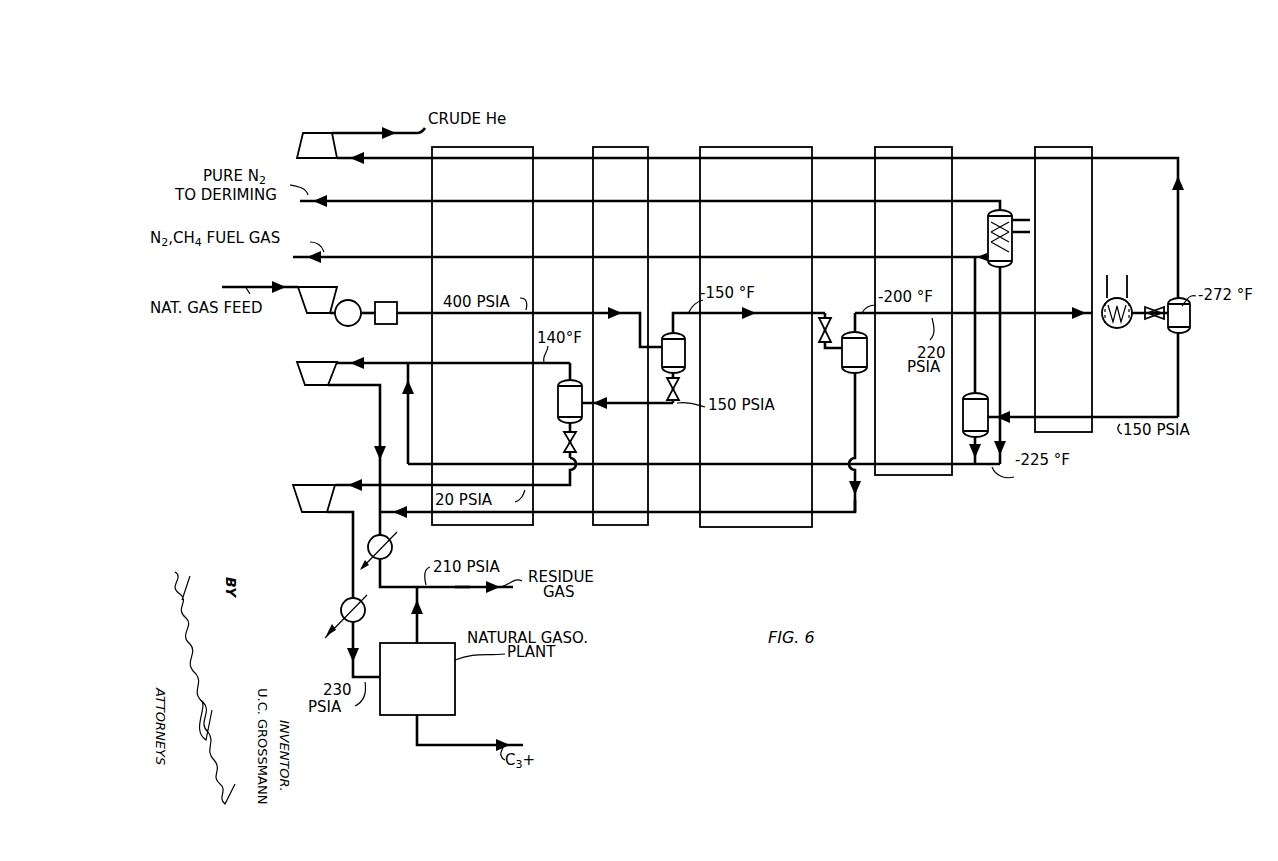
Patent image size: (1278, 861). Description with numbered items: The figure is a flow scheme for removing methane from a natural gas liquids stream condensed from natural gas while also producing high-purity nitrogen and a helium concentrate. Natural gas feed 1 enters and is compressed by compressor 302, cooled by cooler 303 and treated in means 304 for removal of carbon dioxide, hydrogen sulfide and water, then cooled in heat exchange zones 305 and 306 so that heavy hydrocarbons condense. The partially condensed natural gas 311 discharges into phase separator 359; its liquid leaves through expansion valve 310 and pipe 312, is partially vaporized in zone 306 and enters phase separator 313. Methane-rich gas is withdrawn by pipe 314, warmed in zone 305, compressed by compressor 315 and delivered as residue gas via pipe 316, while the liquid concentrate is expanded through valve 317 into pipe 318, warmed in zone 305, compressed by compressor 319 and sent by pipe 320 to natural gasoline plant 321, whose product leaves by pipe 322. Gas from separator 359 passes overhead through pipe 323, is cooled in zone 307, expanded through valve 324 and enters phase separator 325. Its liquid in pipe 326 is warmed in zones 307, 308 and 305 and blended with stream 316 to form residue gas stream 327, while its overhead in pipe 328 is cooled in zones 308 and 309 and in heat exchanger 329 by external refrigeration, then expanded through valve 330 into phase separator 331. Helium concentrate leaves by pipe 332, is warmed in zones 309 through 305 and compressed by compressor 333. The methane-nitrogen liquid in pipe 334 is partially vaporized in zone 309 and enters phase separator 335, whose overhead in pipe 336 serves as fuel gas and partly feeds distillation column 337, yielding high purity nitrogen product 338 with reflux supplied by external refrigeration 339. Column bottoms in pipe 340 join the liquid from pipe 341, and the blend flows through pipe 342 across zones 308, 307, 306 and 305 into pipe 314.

The natural gas feed line 1 is at (234, 286).
The compressor 302 is at (322, 287).
The cooler 303 is at (344, 302).
The treating means 304 is at (386, 302).
The heat exchange zone 305 is at (482, 336).
The heat exchange zone 306 is at (620, 336).
The heat exchange zone 307 is at (756, 337).
The heat exchange zone 308 is at (913, 311).
The heat exchange zone 309 is at (1063, 289).
The expansion valve 310 is at (679, 389).
The partially condensed natural gas 311 is at (585, 312).
The pipe 312 is at (620, 400).
The phase separator 313 is at (582, 380).
The pipe 314 is at (498, 360).
The compressor 315 is at (304, 358).
The pipe 316 is at (380, 439).
The valve 317 is at (576, 442).
The pipe 318 is at (558, 497).
The compressor 319 is at (318, 482).
The pipe 320 is at (346, 531).
The natural gasoline plant 321 is at (456, 671).
The pipe 322 is at (448, 748).
The pipe 323 is at (679, 320).
The valve 324 is at (824, 314).
The phase separator 325 is at (867, 360).
The pipe 326 is at (854, 502).
The residue gas stream 327 is at (471, 590).
The pipe 328 is at (885, 322).
The heat exchanger 329 is at (1118, 329).
The valve 330 is at (1158, 324).
The phase separator 331 is at (1184, 329).
The pipe 332 is at (575, 156).
The compressor 333 is at (302, 136).
The pipe 334 is at (1182, 417).
The phase separator 335 is at (964, 404).
The pipe 336 is at (361, 256).
The distillation column 337 is at (1004, 252).
The high purity nitrogen product 338 is at (367, 204).
The external refrigeration 339 is at (1026, 220).
The pipe 340 is at (1000, 339).
The pipe 341 is at (970, 449).
The pipe 342 is at (494, 464).
The phase separator 359 is at (677, 346).